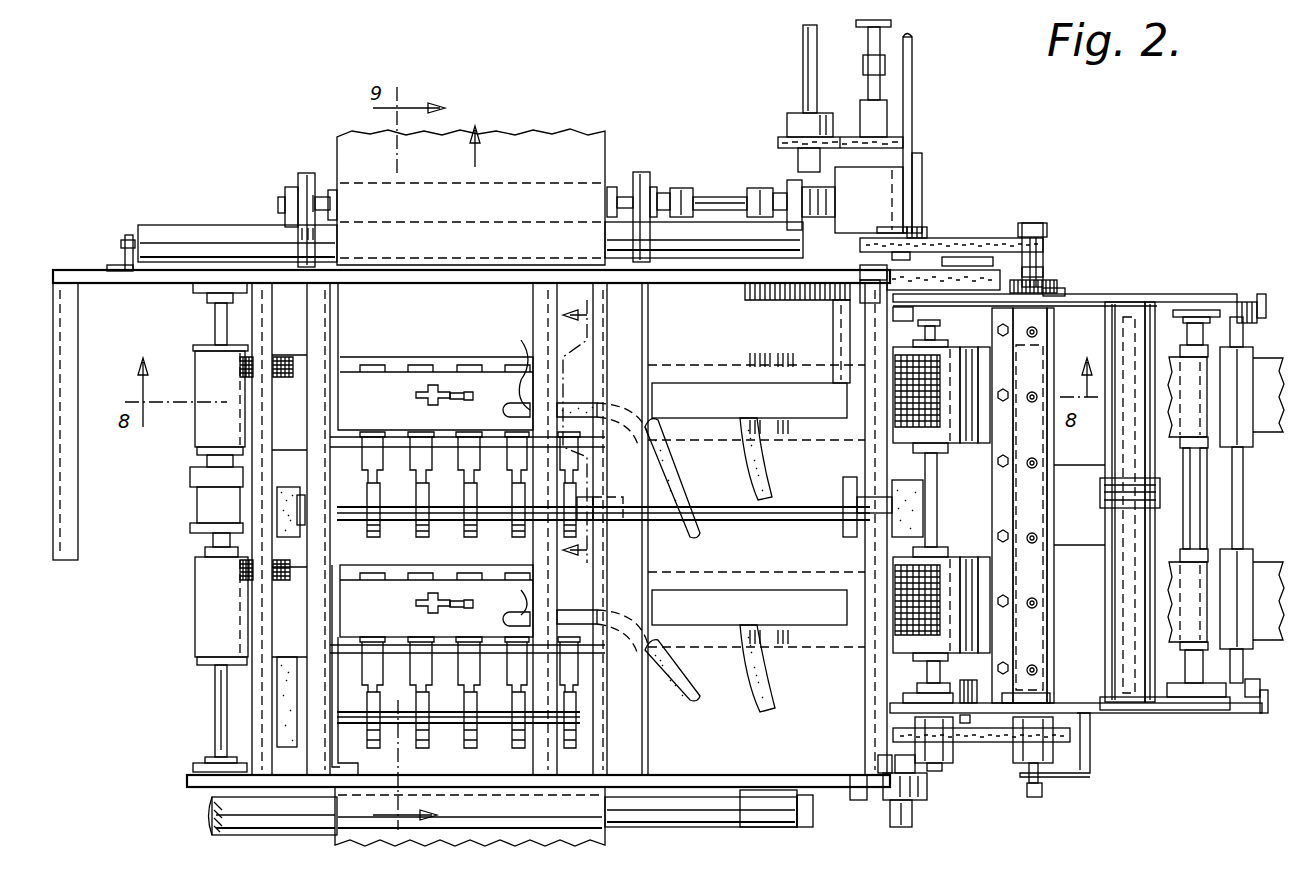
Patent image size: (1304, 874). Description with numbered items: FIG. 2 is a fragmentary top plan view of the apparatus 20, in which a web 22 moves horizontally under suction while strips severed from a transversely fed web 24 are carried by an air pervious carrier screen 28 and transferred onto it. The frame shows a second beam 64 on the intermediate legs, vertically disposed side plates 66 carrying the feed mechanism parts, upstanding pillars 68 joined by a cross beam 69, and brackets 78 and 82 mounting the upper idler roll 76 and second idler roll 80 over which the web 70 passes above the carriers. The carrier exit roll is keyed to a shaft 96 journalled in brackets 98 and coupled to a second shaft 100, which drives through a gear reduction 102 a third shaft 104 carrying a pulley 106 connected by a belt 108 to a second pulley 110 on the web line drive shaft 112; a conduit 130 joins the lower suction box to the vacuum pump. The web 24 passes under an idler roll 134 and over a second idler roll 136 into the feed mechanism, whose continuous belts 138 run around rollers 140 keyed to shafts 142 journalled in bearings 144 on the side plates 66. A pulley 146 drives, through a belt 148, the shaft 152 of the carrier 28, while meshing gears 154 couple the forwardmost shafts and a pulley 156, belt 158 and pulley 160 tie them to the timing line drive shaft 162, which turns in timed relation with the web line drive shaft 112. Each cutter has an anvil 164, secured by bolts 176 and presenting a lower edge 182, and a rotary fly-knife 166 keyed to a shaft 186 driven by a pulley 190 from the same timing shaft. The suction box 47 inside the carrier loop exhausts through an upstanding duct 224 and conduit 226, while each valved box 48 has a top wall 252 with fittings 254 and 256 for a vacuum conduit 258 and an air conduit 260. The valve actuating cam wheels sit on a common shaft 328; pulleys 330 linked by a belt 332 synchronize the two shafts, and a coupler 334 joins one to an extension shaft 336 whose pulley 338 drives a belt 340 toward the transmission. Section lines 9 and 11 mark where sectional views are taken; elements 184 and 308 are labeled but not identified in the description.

The apparatus 20 is at (1205, 270).
The web 22 is at (543, 133).
The web 24 is at (1250, 442).
The carrier screen 28 is at (200, 372).
The vacuum or suction box 47 is at (749, 507).
The valved box 48 is at (600, 529).
The second beam 64 is at (760, 748).
The side plates 66 is at (1165, 294).
The pillar 68 is at (88, 268).
The cross beam 69 is at (78, 466).
The web 70 is at (598, 138).
The upper idler roll 76 is at (690, 820).
The brackets 78 is at (807, 827).
The second idler roll 80 is at (200, 207).
The brackets 82 is at (130, 235).
The shaft 96 is at (313, 195).
The brackets 98 is at (305, 172).
The second shaft 100 is at (722, 197).
The gear reduction 102 is at (905, 172).
The third shaft 104 is at (880, 100).
The pulley 106 is at (890, 137).
The belt 108 is at (778, 142).
The second pulley 110 is at (805, 113).
The web line drive shaft 112 is at (803, 32).
The conduit 130 is at (936, 771).
The idler roll 134 is at (1250, 335).
The second idler roll 136 is at (1260, 294).
The continuous belts 138 is at (1050, 455).
The rollers 140 is at (1108, 470).
The shafts 142 is at (1043, 270).
The bearings 144 is at (1065, 290).
The pulley 146 is at (1090, 750).
The belt 148 is at (962, 758).
The shaft 152 is at (920, 800).
The gear 154 is at (1055, 280).
The pulley 156 is at (1043, 230).
The belt 158 is at (962, 238).
The pulley 160 is at (925, 227).
The timing line drive shaft 162 is at (913, 45).
The anvil 164 is at (992, 465).
The rotary fly-knife 166 is at (965, 475).
The bolts 176 is at (1032, 393).
The forwardly facing lower edge 182 is at (1020, 515).
The nut 184 is at (996, 335).
The shaft 186 is at (966, 505).
The pulley 190 is at (975, 257).
The upstanding duct 224 is at (715, 395).
The conduit 226 is at (765, 470).
The top wall 252 is at (390, 375).
The fitting 254 is at (525, 340).
The fitting 256 is at (416, 397).
The vacuum conduit 258 is at (688, 545).
The air conduit 260 is at (470, 395).
The finger 308 is at (380, 565).
The common shaft 328 is at (603, 641).
The pulley 330 is at (277, 497).
The belt 332 is at (283, 517).
The coupler 334 is at (630, 455).
The extension shaft 336 is at (600, 500).
The pulley 338 is at (850, 490).
The belt 340 is at (895, 515).
The section line 9— 9 is at (470, 773).
The section line 11— 11 is at (599, 430).